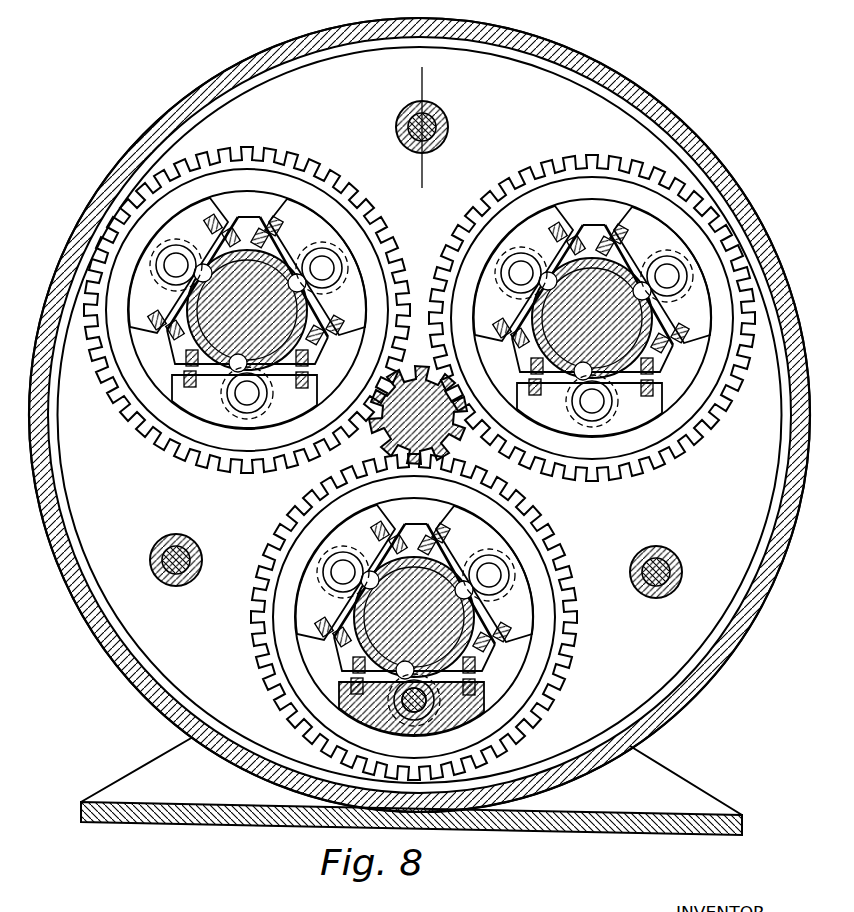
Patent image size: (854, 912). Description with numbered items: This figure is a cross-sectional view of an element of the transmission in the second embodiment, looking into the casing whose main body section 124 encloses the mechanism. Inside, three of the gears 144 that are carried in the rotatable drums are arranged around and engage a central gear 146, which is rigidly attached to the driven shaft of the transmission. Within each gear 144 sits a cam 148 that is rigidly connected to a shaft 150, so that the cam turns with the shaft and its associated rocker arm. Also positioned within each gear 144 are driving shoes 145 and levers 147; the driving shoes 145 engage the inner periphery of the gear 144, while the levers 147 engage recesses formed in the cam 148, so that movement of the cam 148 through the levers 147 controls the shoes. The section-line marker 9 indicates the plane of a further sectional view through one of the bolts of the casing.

The section line 9- 9 is at (410, 81).
The main body section 124 is at (160, 700).
The gear 144 is at (560, 662).
The driving shoe 145 is at (317, 605).
The central gear 146 is at (462, 452).
The lever 147 is at (505, 565).
The cam 148 is at (487, 677).
The shaft 150 is at (392, 640).